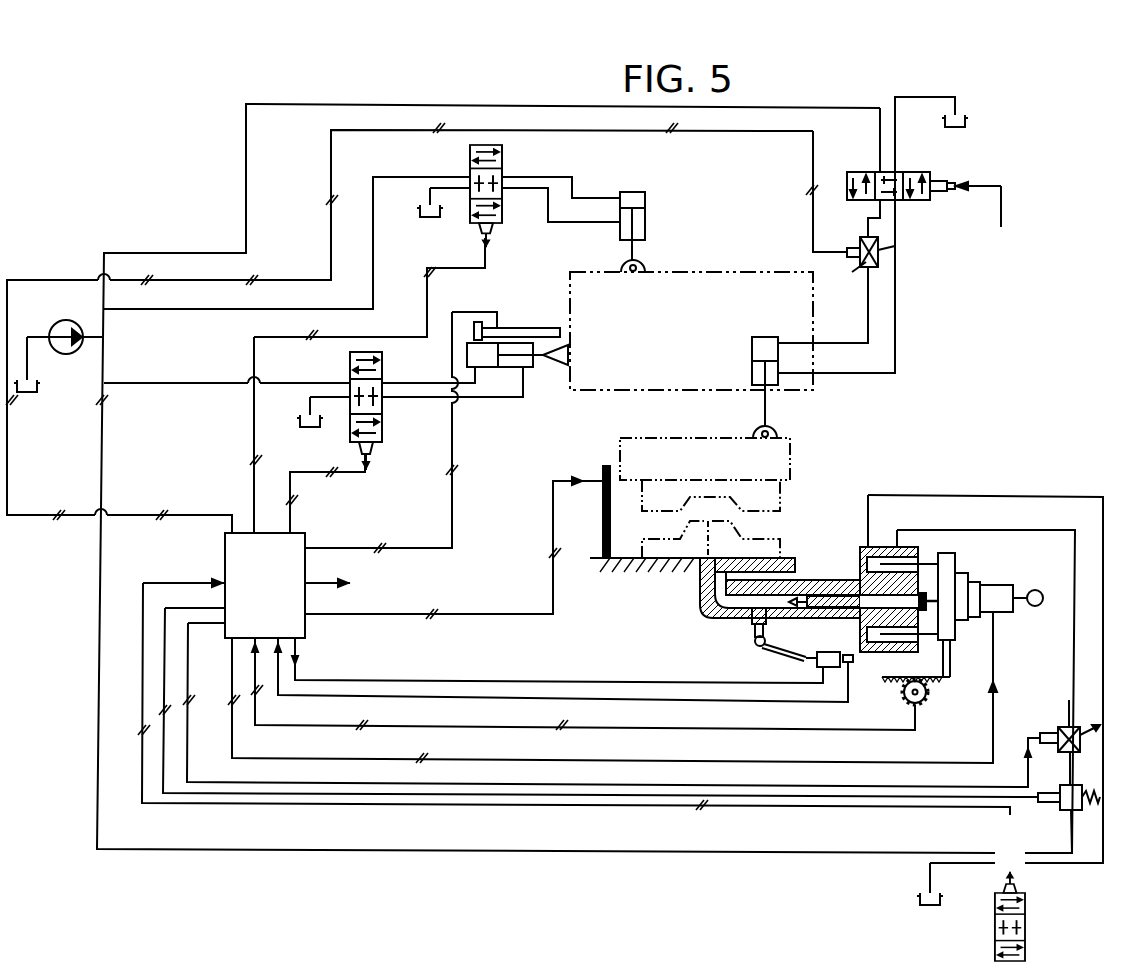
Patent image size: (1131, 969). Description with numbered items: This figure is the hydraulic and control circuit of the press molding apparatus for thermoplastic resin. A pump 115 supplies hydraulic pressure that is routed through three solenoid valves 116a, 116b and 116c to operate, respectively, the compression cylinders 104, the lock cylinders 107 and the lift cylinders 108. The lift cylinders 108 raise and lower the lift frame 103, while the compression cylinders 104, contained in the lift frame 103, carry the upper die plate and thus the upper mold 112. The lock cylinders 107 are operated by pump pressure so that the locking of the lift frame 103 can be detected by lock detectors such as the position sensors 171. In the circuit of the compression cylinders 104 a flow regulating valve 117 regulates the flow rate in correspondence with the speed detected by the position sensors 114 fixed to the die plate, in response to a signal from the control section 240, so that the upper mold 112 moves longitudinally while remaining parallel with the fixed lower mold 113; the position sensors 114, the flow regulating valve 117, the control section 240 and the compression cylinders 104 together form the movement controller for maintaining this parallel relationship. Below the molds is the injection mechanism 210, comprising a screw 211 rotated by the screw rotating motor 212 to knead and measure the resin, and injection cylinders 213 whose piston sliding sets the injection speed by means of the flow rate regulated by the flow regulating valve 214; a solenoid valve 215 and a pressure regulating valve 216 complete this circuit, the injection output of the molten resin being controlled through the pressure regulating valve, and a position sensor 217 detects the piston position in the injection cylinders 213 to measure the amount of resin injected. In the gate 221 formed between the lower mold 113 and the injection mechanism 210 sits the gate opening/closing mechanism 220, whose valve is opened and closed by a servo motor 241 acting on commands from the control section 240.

The lift frame 103 is at (757, 270).
The compression cylinders 104 is at (778, 387).
The lock cylinders 107 is at (535, 367).
The lift cylinders 108 is at (645, 221).
The upper mold 112 is at (783, 502).
The lower mold 113 is at (780, 540).
The position sensors 114 is at (600, 497).
The pump 115 is at (67, 354).
The solenoid valve 116a is at (907, 172).
The solenoid valve 116b is at (383, 423).
The solenoid valve 116c is at (502, 153).
The flow regulating valve 117 is at (860, 267).
The position sensor 171 is at (517, 326).
The injection mechanism 210 is at (845, 580).
The screw 211 is at (807, 583).
The screw rotating motor 212 is at (997, 592).
The injection cylinders 213 is at (920, 547).
The flow regulating valve 214 is at (1060, 727).
The solenoid valve 215 is at (1025, 880).
The pressure regulating valve 216 is at (1050, 810).
The position sensor 217 is at (935, 690).
The gate opening/closing mechanism 220 is at (748, 638).
The gate 221 is at (738, 618).
The control section 240 is at (305, 628).
The servo motor 241 is at (817, 660).